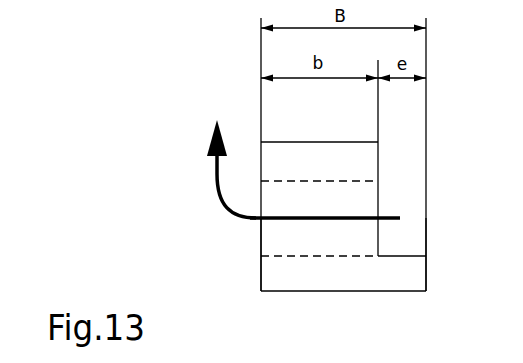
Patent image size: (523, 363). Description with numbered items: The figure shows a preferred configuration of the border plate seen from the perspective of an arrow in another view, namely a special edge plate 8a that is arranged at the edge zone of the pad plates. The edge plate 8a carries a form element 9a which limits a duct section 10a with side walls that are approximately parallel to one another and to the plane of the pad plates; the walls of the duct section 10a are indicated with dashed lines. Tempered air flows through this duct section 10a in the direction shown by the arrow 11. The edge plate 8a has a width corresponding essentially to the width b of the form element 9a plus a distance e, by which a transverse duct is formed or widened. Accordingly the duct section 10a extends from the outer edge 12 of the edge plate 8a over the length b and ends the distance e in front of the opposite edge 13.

The edge plate 8a is at (339, 280).
The form element 9a is at (261, 243).
The duct section 10a is at (292, 246).
The arrow 11 is at (215, 175).
The outer edge 12 is at (261, 275).
The opposite edge 13 is at (427, 274).